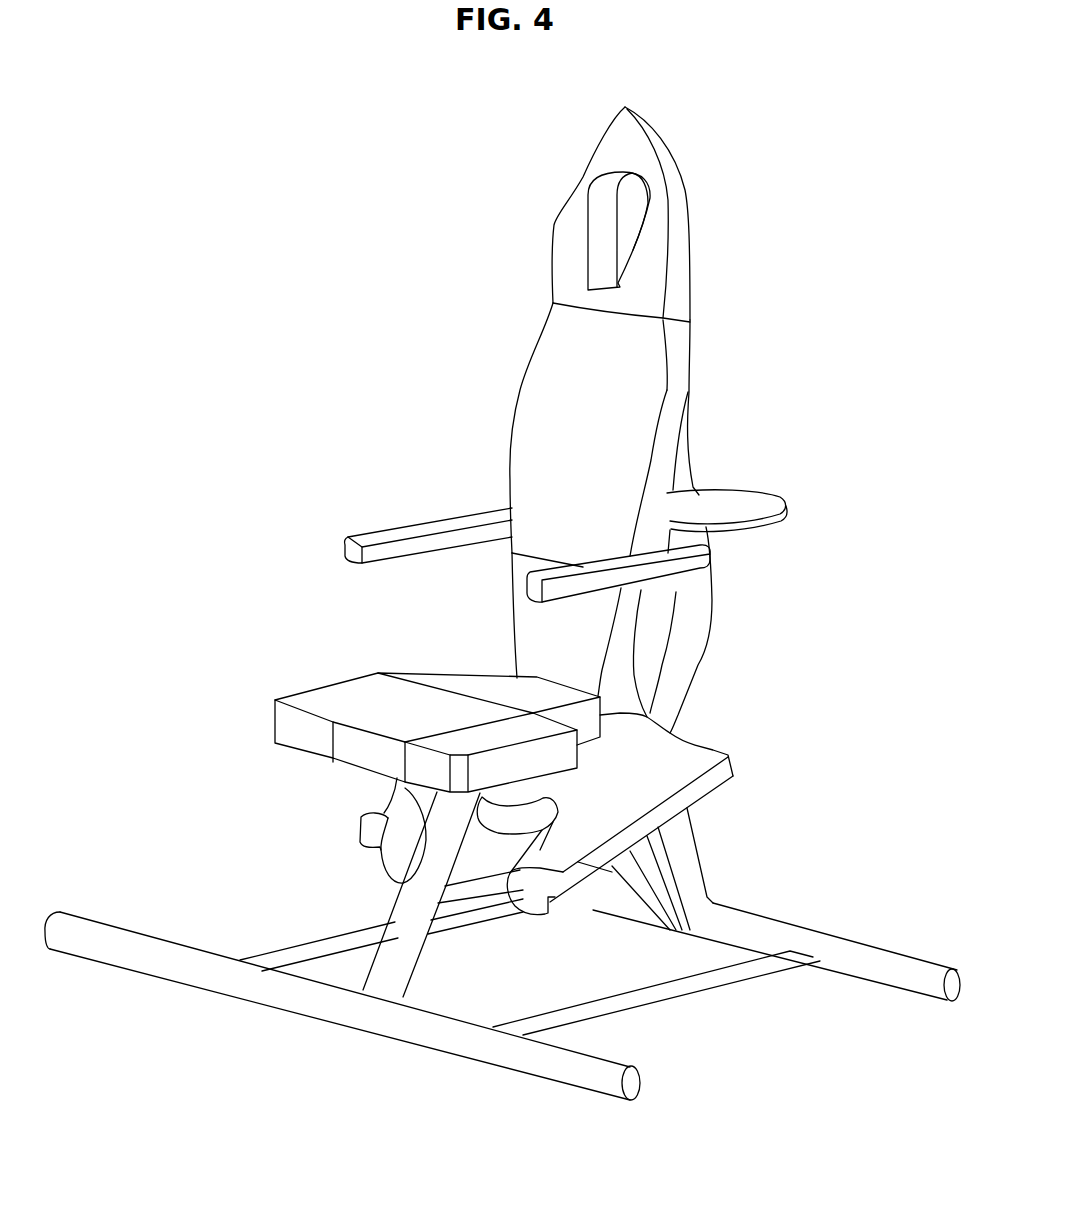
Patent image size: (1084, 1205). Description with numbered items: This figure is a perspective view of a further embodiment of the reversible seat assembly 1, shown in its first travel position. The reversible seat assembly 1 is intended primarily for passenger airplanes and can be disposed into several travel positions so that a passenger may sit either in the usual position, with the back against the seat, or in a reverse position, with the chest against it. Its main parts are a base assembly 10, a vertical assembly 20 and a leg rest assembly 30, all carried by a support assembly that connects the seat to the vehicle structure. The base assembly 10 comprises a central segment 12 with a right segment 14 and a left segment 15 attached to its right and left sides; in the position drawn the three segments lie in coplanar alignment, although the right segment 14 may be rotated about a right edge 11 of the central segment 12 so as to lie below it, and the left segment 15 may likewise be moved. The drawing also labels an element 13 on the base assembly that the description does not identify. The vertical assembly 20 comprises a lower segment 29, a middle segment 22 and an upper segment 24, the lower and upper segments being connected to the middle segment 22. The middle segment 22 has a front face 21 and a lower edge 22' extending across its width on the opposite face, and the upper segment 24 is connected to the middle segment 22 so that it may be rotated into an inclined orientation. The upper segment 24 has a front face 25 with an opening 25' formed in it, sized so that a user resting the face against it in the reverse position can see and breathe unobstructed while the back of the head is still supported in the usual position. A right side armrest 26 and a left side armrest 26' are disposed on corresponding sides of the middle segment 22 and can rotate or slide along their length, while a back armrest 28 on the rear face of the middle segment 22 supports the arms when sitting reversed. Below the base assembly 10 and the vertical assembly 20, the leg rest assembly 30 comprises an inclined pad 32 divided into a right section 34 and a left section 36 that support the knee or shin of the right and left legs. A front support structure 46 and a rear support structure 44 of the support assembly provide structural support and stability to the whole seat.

The reversible seat assembly 1 is at (178, 222).
The base assembly 10 is at (252, 655).
The right edge 11 is at (373, 813).
The central segment 12 is at (370, 757).
The middle seat pad 13 is at (333, 766).
The right segment 14 is at (441, 766).
The left segment 15 is at (300, 735).
The vertical assembly 20 is at (466, 405).
The front face 21 is at (643, 417).
The middle segment 22 is at (698, 526).
The lower edge 22' is at (702, 653).
The upper segment 24 is at (677, 200).
The front face 25 is at (662, 250).
The opening 25' is at (687, 230).
The right side armrest 26 is at (657, 573).
The left side armrest 26' is at (428, 514).
The back armrest 28 is at (757, 504).
The lower segment 29 is at (527, 631).
The leg rest assembly 30 is at (764, 760).
The pad 32 is at (620, 773).
The right section 34 is at (537, 870).
The left section 36 is at (407, 848).
The rear support structure 44 is at (690, 863).
The front support structure 46 is at (407, 982).